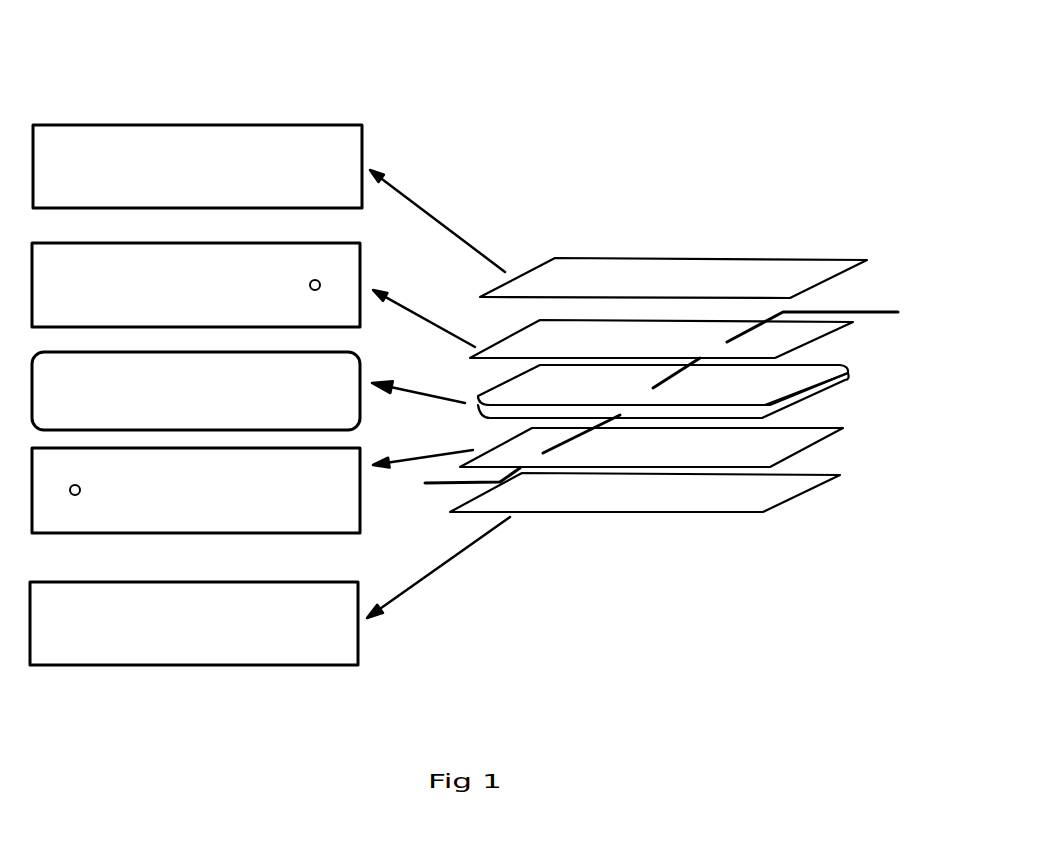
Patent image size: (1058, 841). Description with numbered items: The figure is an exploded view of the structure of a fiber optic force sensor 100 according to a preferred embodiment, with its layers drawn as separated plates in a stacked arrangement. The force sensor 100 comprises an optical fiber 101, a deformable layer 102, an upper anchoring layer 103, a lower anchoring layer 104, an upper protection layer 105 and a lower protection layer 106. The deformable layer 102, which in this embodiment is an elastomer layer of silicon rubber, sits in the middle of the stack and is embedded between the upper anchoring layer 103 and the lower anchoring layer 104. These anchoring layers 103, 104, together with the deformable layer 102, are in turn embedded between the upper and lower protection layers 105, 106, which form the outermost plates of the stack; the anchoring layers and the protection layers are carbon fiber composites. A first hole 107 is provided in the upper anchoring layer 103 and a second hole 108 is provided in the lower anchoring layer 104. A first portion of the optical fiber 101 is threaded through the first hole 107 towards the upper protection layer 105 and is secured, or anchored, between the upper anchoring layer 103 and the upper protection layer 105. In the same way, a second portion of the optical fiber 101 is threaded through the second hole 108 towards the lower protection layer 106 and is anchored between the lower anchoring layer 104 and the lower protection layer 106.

The fiber optic force sensor 100 is at (582, 115).
The optical fiber 101 is at (866, 311).
The deformable layer 102 is at (827, 393).
The upper anchoring layer 103 is at (818, 337).
The lower anchoring layer 104 is at (813, 443).
The upper protection layer 105 is at (603, 258).
The lower protection layer 106 is at (623, 513).
The first hole 107 is at (310, 286).
The second hole 108 is at (80, 490).